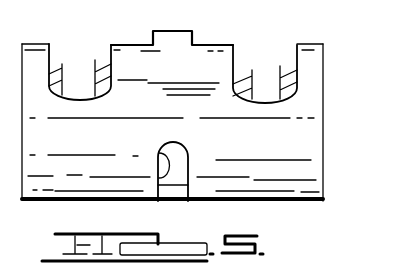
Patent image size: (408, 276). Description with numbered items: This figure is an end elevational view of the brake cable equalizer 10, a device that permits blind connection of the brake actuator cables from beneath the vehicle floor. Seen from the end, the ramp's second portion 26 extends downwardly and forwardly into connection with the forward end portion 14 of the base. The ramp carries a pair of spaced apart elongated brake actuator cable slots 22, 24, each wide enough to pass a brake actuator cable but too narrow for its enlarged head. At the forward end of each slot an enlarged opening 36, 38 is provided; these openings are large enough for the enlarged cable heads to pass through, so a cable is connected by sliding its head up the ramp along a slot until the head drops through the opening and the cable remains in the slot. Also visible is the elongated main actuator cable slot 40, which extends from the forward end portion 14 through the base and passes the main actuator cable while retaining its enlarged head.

The brake cable equalizer 10 is at (334, 34).
The forward end portion 14 is at (318, 190).
The brake actuator cable slot 22 is at (258, 75).
The brake actuator cable slot 24 is at (64, 72).
The second portion 26 is at (314, 82).
The enlarged opening 36 is at (242, 44).
The enlarged opening 38 is at (110, 62).
The main actuator cable slot 40 is at (158, 152).